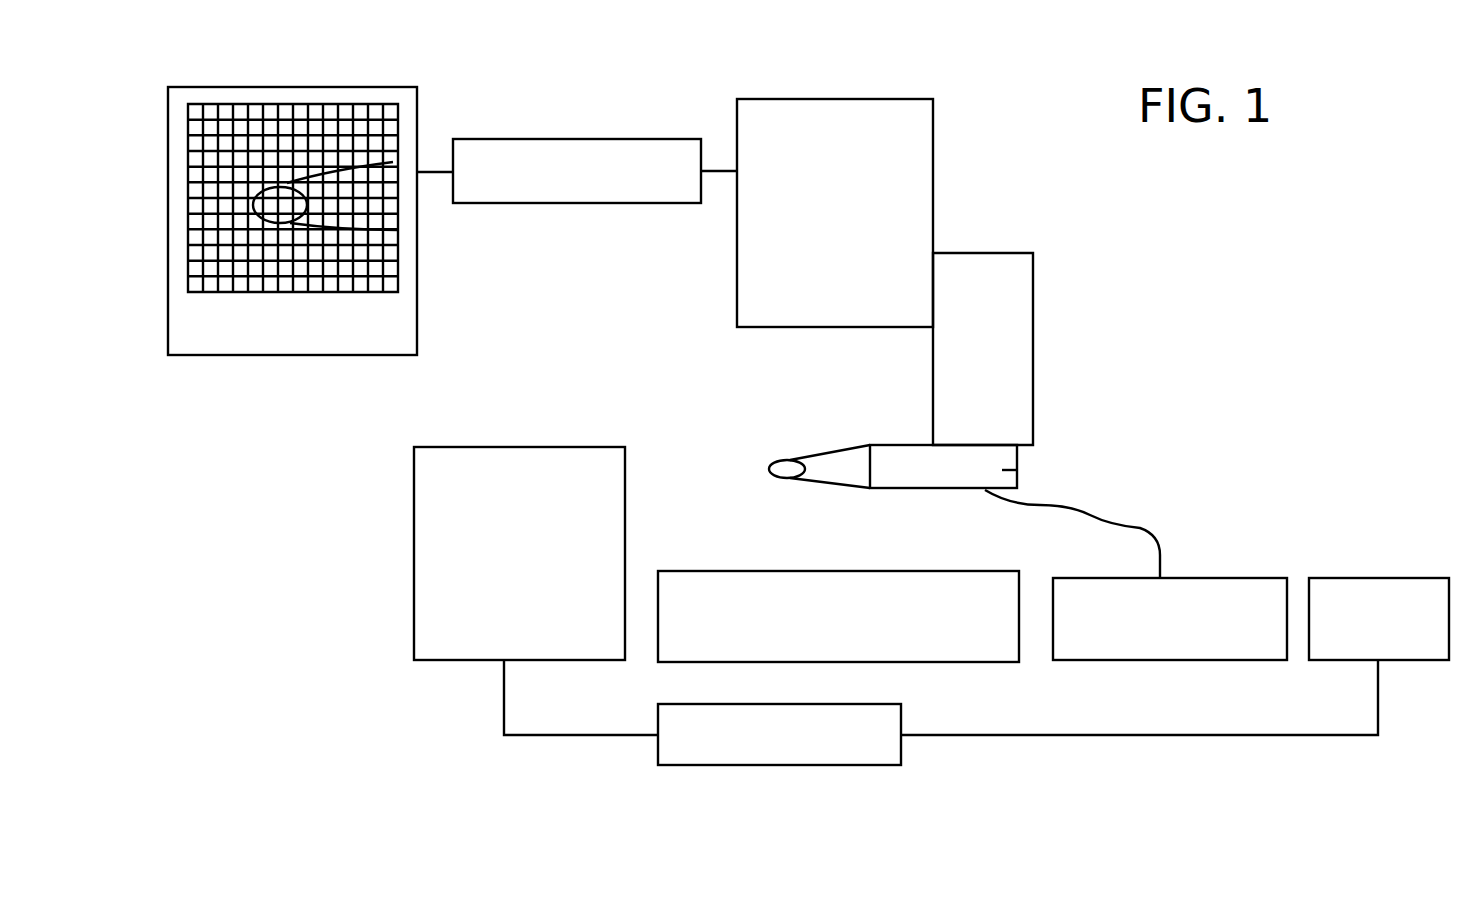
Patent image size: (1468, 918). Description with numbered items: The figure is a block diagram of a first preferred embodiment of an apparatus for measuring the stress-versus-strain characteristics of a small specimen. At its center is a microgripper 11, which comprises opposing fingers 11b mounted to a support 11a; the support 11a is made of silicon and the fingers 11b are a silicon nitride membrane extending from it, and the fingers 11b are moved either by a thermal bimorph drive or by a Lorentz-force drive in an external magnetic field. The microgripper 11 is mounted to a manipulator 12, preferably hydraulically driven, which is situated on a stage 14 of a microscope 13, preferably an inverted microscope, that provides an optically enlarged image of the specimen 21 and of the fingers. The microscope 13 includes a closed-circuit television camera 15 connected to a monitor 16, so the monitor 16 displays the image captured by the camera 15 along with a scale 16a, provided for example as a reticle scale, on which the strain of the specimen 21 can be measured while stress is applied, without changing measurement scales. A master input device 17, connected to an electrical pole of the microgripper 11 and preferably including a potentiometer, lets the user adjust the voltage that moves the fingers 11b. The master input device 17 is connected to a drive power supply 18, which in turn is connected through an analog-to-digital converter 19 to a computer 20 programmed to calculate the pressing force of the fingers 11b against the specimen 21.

The microgripper 11 is at (1038, 455).
The support 11a is at (1017, 470).
The fingers 11b is at (334, 168).
The manipulator 12 is at (1020, 290).
The microscope 13 is at (917, 165).
The stage 14 is at (957, 639).
The closed-circuit television camera 15 is at (593, 148).
The monitor 16 is at (385, 327).
The scale 16a is at (242, 117).
The master input device 17 is at (1230, 595).
The drive power supply 18 is at (1345, 585).
The analog-to-digital converter 19 is at (839, 750).
The computer 20 is at (454, 645).
The specimen 21 is at (273, 205).